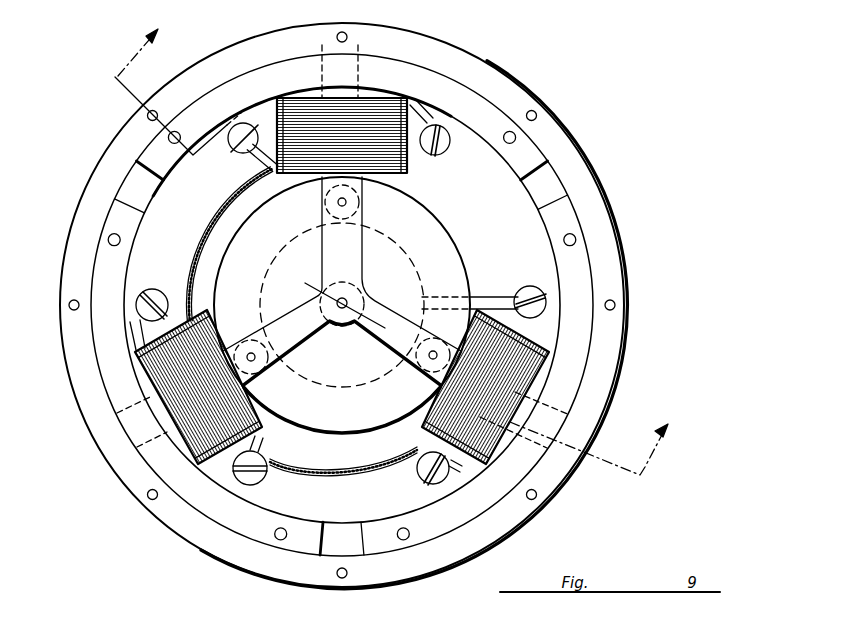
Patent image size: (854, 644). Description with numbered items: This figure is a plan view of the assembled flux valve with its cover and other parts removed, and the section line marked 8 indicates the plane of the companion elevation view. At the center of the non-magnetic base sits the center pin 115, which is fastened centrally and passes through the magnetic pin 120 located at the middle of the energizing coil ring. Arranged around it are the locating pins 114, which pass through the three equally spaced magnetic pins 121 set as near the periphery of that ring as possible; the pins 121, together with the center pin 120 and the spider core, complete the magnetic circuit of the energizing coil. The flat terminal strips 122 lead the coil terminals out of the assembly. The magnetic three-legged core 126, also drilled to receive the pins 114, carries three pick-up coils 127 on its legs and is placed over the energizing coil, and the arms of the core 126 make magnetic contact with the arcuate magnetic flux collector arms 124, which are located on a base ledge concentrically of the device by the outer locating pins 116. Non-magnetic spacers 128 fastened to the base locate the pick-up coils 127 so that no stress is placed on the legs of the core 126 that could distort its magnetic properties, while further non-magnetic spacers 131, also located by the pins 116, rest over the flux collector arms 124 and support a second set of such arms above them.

The section line 8- 8 is at (398, 242).
The locating pins 114 is at (362, 200).
The center pin 115 is at (339, 299).
The locating pins 116 is at (180, 132).
The magnetic pin 120 is at (367, 272).
The magnetic pins 121 is at (328, 208).
The flat terminal strips 122 is at (247, 168).
The arcuate magnetic flux collector arms 124 is at (235, 72).
The magnetic three-legged core 126 is at (350, 95).
The pick-up coils 127 is at (400, 100).
The non-magnetic spacers 128 is at (233, 225).
The non-magnetic spacers 131 is at (125, 185).